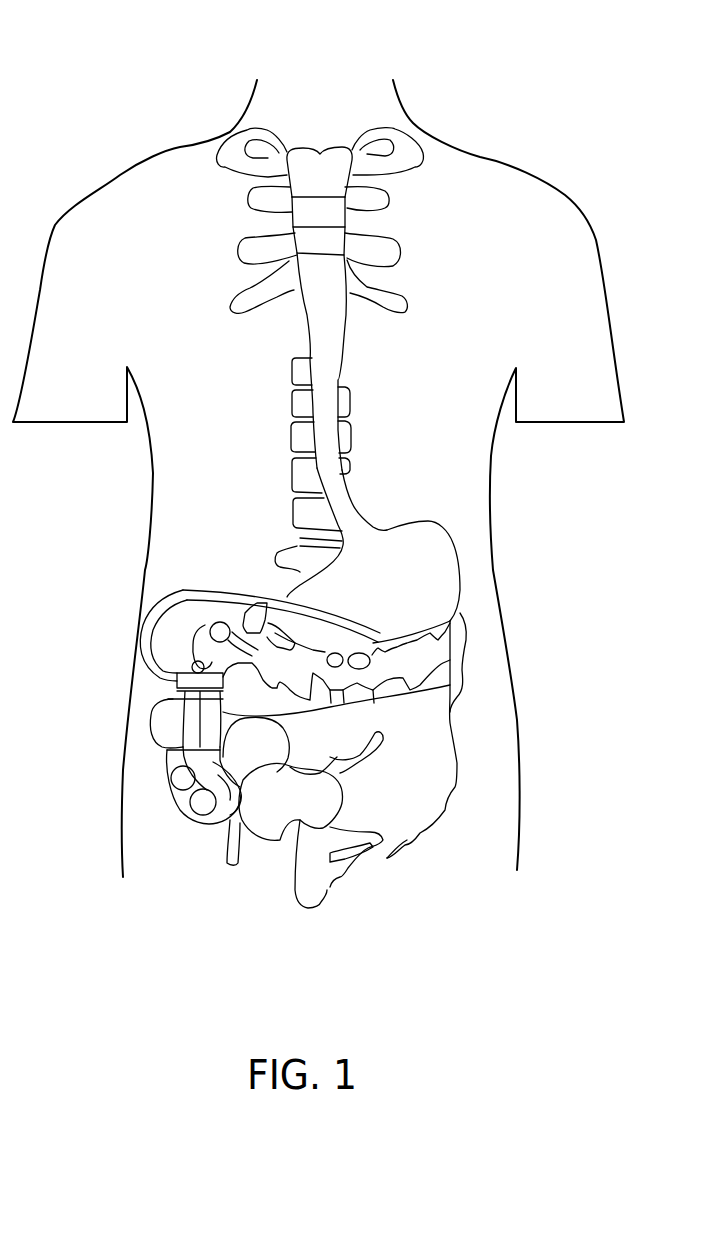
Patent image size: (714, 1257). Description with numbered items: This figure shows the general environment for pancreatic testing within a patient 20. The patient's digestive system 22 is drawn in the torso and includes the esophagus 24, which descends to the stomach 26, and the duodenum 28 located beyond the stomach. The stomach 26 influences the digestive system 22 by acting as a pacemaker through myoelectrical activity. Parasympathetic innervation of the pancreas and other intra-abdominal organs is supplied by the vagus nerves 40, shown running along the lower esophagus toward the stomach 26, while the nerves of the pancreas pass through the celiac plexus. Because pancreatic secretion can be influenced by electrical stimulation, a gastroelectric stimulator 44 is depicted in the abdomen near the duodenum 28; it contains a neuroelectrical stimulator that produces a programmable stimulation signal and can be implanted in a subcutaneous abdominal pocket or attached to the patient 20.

The patient 20 is at (128, 125).
The digestive system 22 is at (531, 676).
The esophagus 24 is at (343, 353).
The stomach 26 is at (416, 582).
The duodenum 28 is at (247, 597).
The vagus nerves 40 is at (350, 500).
The gastroelectric stimulator 44 is at (152, 713).